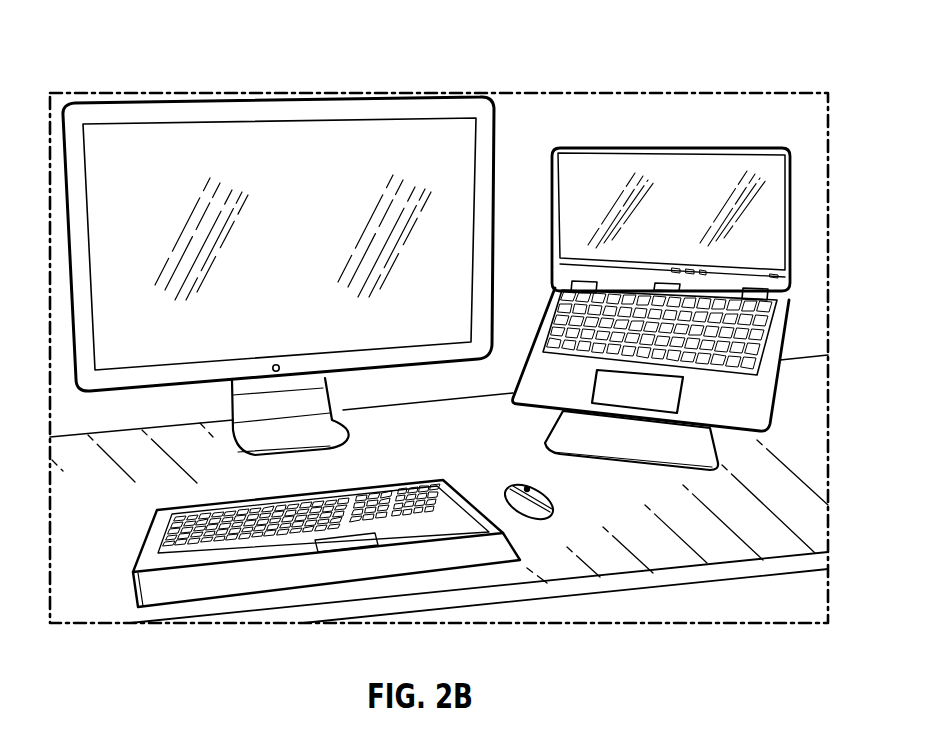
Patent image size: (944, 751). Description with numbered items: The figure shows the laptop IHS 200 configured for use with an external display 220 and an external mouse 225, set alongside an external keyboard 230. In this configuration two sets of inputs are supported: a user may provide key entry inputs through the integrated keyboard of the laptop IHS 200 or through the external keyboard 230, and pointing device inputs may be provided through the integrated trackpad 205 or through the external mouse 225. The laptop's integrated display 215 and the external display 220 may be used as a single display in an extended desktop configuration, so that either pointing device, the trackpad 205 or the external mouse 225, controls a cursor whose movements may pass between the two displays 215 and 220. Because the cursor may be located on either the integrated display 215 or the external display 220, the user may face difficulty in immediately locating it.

The laptop IHS 200 is at (808, 71).
The trackpad 205 is at (646, 282).
The display 215 is at (690, 172).
The external display 220 is at (296, 145).
The external mouse 225 is at (528, 484).
The external keyboard 230 is at (443, 480).